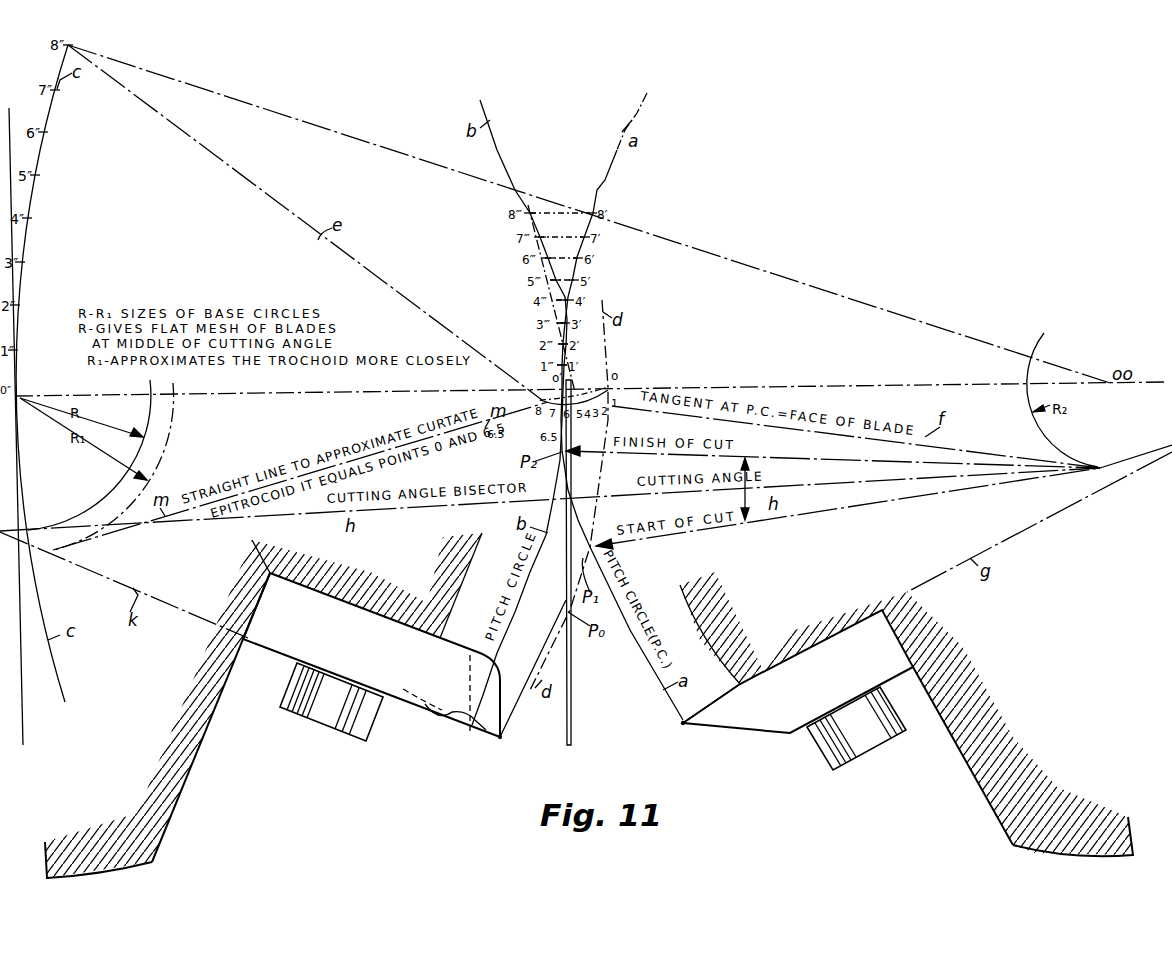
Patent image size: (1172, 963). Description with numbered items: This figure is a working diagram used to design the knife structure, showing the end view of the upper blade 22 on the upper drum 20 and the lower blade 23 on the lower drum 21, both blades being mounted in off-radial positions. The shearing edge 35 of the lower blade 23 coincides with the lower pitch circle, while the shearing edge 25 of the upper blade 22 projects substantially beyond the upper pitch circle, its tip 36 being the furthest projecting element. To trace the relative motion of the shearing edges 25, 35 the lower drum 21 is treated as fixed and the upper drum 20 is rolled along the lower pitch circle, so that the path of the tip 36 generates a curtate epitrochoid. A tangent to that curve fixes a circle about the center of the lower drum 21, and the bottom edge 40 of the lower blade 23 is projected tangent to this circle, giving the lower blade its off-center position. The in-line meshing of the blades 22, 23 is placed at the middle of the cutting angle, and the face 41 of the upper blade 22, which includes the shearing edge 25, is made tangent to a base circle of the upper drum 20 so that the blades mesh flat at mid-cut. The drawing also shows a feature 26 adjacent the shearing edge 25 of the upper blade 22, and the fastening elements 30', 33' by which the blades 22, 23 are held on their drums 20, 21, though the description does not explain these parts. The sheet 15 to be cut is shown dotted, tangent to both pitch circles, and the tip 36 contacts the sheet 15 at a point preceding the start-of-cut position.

The sheet 15 is at (572, 716).
The upper drum 20 is at (168, 800).
The lower drum 21 is at (975, 775).
The upper blade 22 is at (403, 686).
The lower blade 23 is at (776, 724).
The shearing edge 25 is at (490, 740).
The chip breaker notch 26 is at (456, 714).
The left clamping bolt 30' is at (331, 713).
The right clamping bolt 33' is at (856, 743).
The shearing edge 35 is at (683, 725).
The tip 36 is at (502, 737).
The bottom edge 40 is at (712, 705).
The face 41 is at (268, 650).